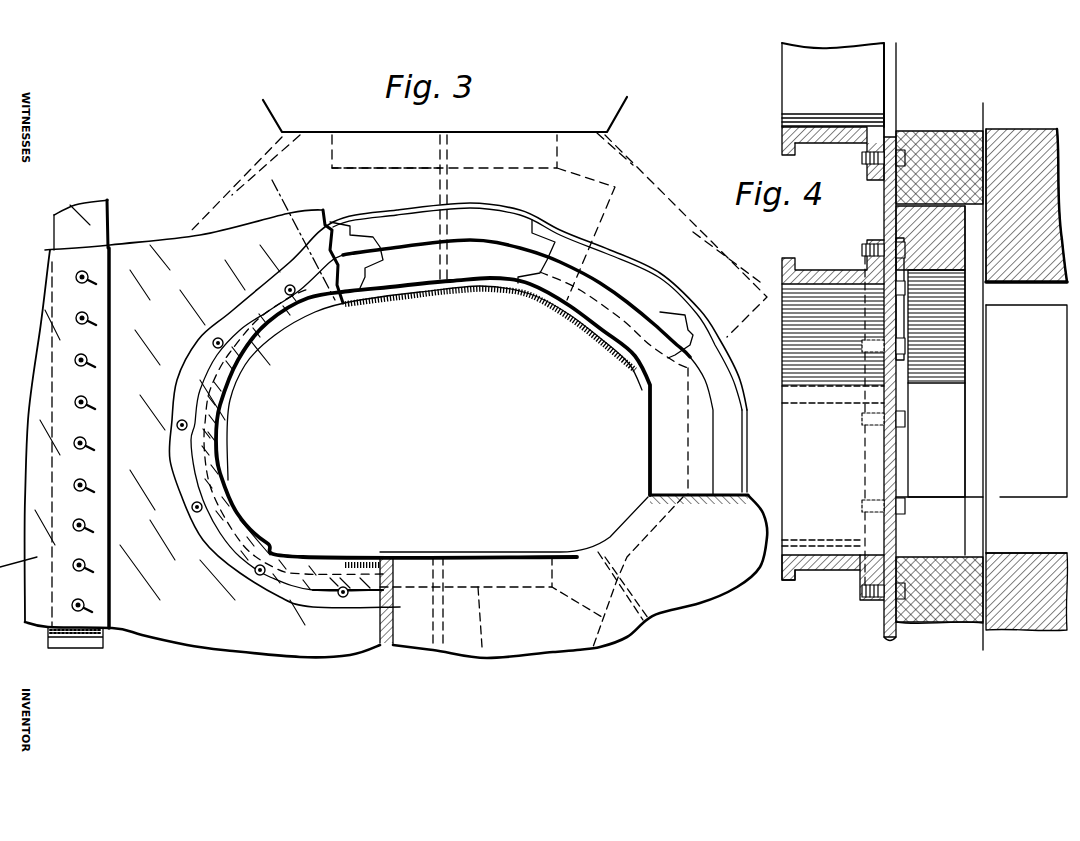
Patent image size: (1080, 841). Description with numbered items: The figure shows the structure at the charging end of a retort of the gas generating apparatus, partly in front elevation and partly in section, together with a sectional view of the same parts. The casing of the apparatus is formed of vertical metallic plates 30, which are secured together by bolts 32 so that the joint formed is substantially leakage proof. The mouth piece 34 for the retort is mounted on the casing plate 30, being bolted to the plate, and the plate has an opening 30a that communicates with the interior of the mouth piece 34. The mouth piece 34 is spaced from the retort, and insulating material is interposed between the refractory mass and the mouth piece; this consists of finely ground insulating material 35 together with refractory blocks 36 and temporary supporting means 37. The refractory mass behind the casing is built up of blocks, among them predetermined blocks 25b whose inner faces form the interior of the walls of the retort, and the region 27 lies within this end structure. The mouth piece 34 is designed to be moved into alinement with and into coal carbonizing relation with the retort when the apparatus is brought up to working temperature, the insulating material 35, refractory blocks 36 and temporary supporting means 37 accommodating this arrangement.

In FIG. 3, the predetermined blocks 25b is at (632, 180).
In FIG. 3, the hood 27 is at (465, 183).
In FIG. 3, the vertical metallic plates 30 is at (210, 625).
In FIG. 4, the vertical metallic plates 30 is at (882, 620).
In FIG. 4, the openings 30a is at (893, 455).
In FIG. 3, the bolts 32 is at (176, 428).
In FIG. 4, the mouth pieces 34 is at (815, 572).
In FIG. 4, the finely ground insulating material 35 is at (920, 131).
In FIG. 3, the refractory blocks 36 is at (590, 300).
In FIG. 4, the refractory blocks 36 is at (955, 268).
In FIG. 4, the temporary supporting means 37 is at (993, 100).